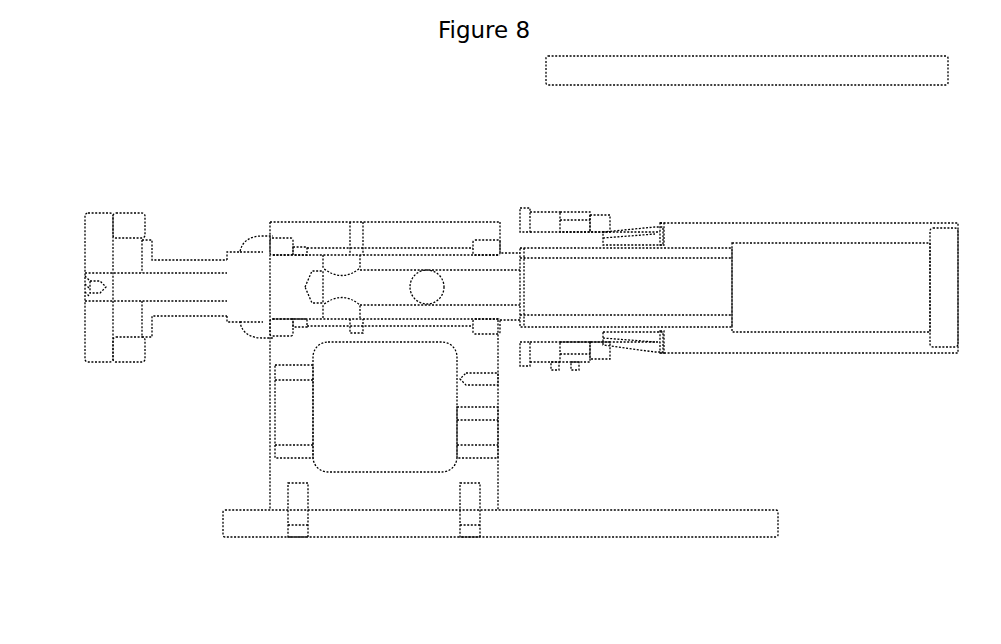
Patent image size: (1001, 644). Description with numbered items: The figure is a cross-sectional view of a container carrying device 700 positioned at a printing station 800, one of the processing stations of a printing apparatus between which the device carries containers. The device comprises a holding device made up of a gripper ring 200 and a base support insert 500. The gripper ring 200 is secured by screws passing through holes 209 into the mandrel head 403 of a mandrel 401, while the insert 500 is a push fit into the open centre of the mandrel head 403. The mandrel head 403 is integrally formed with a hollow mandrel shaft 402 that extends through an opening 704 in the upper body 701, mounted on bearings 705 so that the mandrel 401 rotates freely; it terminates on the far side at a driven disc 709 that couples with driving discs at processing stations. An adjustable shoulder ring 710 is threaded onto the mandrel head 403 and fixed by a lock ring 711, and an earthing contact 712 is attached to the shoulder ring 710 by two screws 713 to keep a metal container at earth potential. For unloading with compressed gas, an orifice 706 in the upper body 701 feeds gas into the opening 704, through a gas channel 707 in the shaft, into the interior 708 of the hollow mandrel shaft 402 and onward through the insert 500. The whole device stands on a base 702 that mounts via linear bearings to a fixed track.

The printing station 800 is at (535, 76).
The container carrying device 700 is at (501, 368).
The upper body 701 is at (275, 356).
The base 702 is at (719, 526).
The driven disc 709 is at (96, 208).
The bearings 705 is at (276, 244).
The orifice 706 is at (354, 221).
The gas channel 707 is at (330, 258).
The opening 704 is at (389, 245).
The mandrel 401 is at (384, 320).
The hollow mandrel shaft 402 is at (446, 259).
The mandrel head 403 is at (506, 228).
The interior of the hollow mandrel shaft 708 is at (397, 294).
The lock ring 711 is at (524, 202).
The holes 209 is at (575, 210).
The screws 713 is at (555, 375).
The shoulder ring 710 is at (607, 200).
The earthing contact 712 is at (622, 373).
The gripper ring 200 is at (637, 216).
The base support insert 500 is at (822, 221).